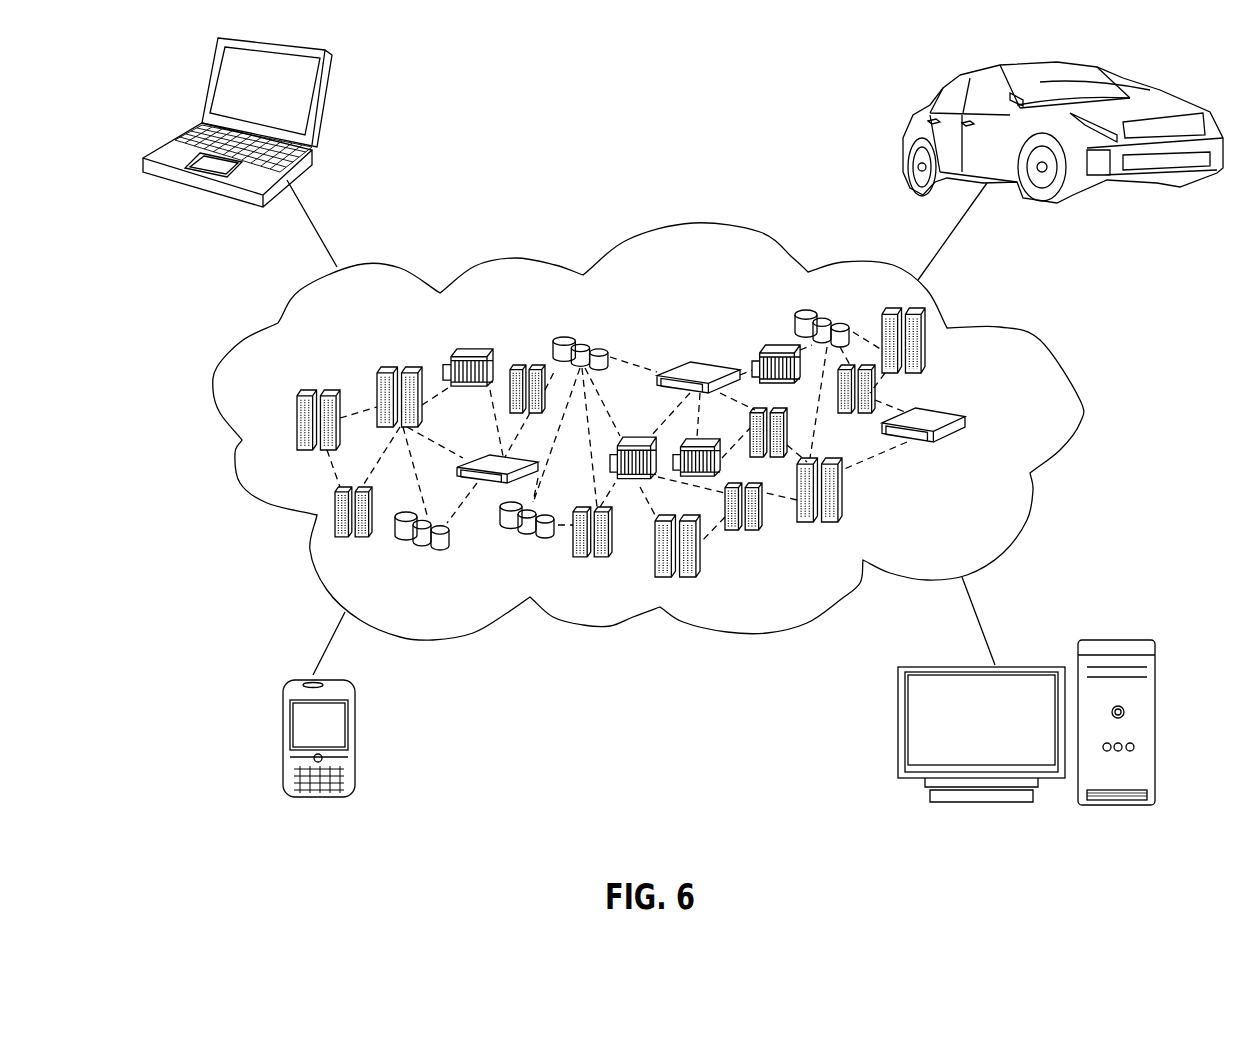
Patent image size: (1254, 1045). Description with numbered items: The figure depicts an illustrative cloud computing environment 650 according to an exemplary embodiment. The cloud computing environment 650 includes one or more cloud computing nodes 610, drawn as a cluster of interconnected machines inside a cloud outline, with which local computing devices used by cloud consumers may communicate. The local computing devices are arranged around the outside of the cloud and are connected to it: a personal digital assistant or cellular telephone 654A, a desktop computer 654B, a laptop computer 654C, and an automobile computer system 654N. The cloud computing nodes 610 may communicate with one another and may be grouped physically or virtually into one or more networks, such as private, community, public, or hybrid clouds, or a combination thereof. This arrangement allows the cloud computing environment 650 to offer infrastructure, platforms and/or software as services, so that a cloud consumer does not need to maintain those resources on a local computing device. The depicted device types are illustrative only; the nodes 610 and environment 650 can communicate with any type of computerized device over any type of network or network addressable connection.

The cloud computing environment 650 is at (1040, 340).
The cloud computing nodes 610 is at (1023, 427).
The personal digital assistant (PDA) or cellular telephone 654A is at (283, 740).
The desktop computer 654B is at (1120, 640).
The laptop computer 654C is at (323, 107).
The automobile computer system 654N is at (908, 113).